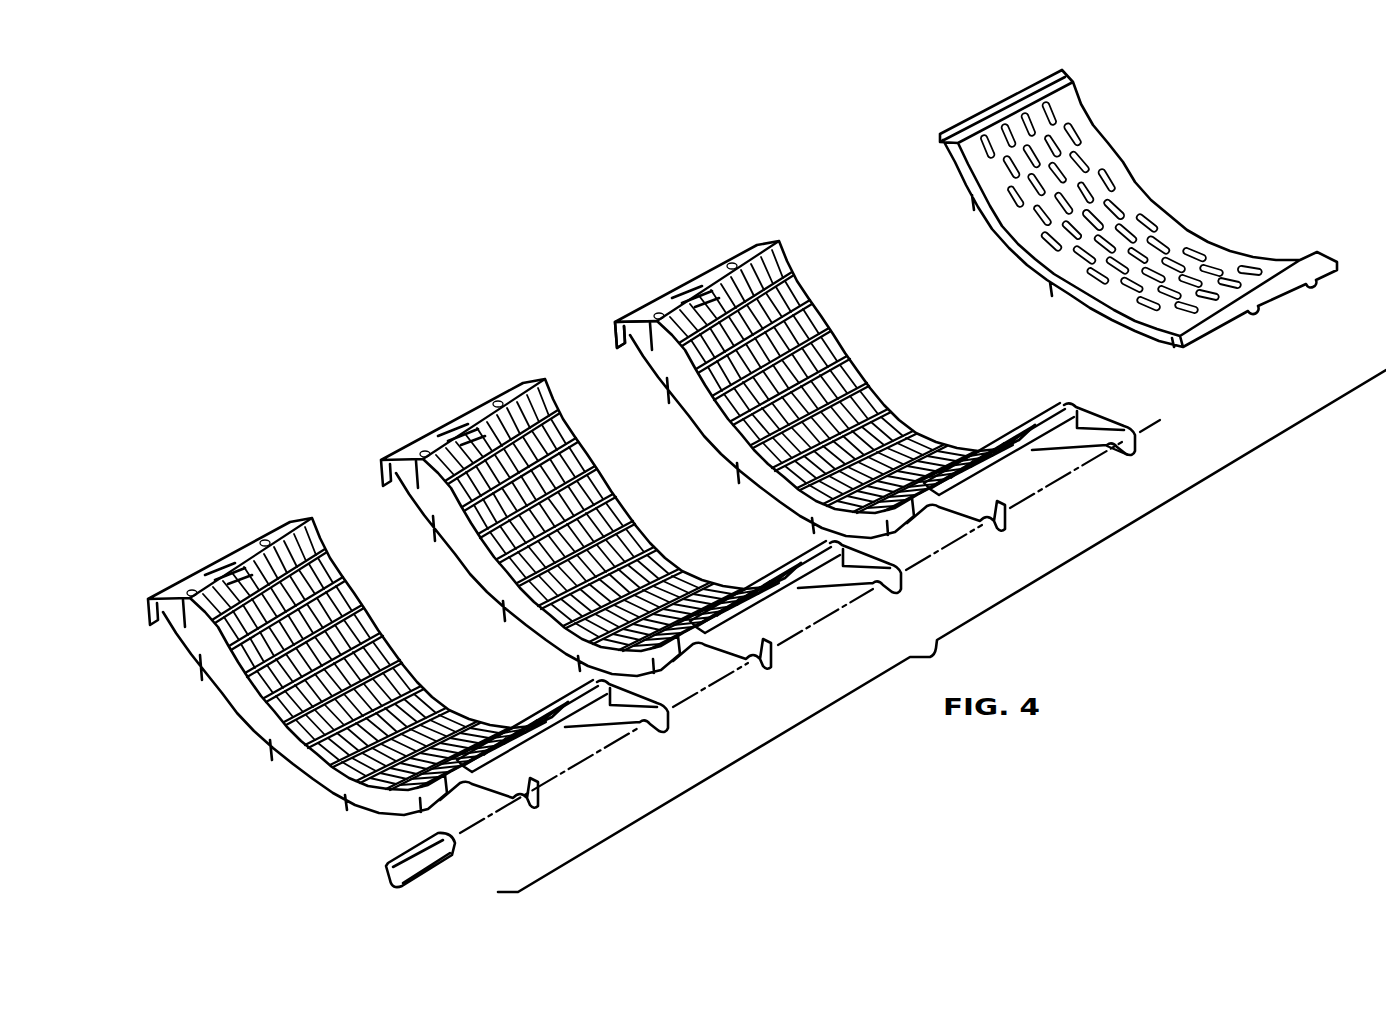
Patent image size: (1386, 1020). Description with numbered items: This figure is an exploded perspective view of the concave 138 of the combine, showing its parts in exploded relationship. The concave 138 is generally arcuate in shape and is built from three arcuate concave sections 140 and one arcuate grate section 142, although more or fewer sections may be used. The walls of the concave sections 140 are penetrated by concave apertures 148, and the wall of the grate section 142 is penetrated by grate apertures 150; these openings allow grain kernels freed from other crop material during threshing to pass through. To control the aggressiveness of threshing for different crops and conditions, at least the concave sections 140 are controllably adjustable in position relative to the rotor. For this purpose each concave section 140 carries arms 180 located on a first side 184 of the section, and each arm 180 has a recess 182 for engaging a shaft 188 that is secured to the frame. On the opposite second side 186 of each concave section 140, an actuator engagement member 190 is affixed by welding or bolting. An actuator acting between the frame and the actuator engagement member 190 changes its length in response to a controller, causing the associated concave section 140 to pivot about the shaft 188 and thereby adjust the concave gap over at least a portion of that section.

The concave 138 is at (363, 257).
The concave section 140 is at (412, 667).
The grate section 142 is at (1138, 207).
The concave aperture 148 is at (847, 379).
The grate aperture 150 is at (1110, 187).
The arm 180 is at (1026, 455).
The recess 182 is at (1088, 446).
The first side 184 is at (1106, 479).
The second side 186 is at (865, 374).
The shaft 188 is at (430, 868).
The actuator engagement member 190 is at (621, 313).